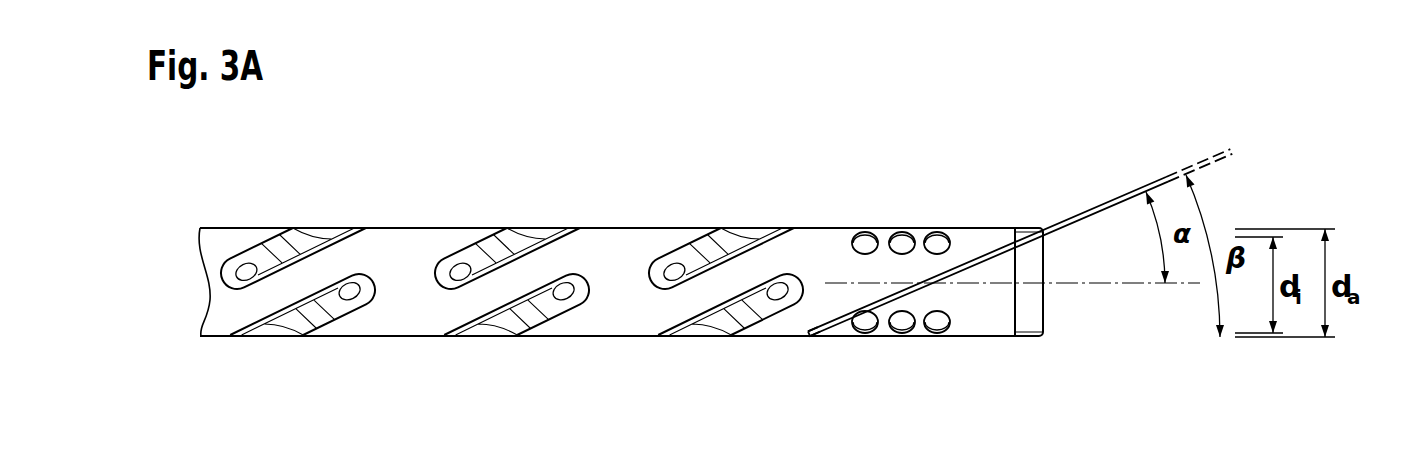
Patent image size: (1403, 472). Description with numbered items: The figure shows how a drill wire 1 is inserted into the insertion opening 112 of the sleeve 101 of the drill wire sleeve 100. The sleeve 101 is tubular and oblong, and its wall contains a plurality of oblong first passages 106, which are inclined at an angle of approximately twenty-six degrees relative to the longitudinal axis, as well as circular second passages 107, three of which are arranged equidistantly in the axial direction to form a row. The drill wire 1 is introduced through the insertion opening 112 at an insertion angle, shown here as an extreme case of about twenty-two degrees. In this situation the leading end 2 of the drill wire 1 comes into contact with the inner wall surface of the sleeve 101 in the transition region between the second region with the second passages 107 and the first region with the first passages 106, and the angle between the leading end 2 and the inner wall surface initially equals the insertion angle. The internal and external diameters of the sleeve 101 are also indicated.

The drill wire sleeve 100 is at (705, 180).
The sleeve 101 is at (640, 257).
The first passages 106 is at (505, 318).
The second passages 107 is at (938, 324).
The insertion opening 112 is at (1055, 310).
The drill wire 1 is at (1110, 208).
The leading end 2 is at (813, 336).